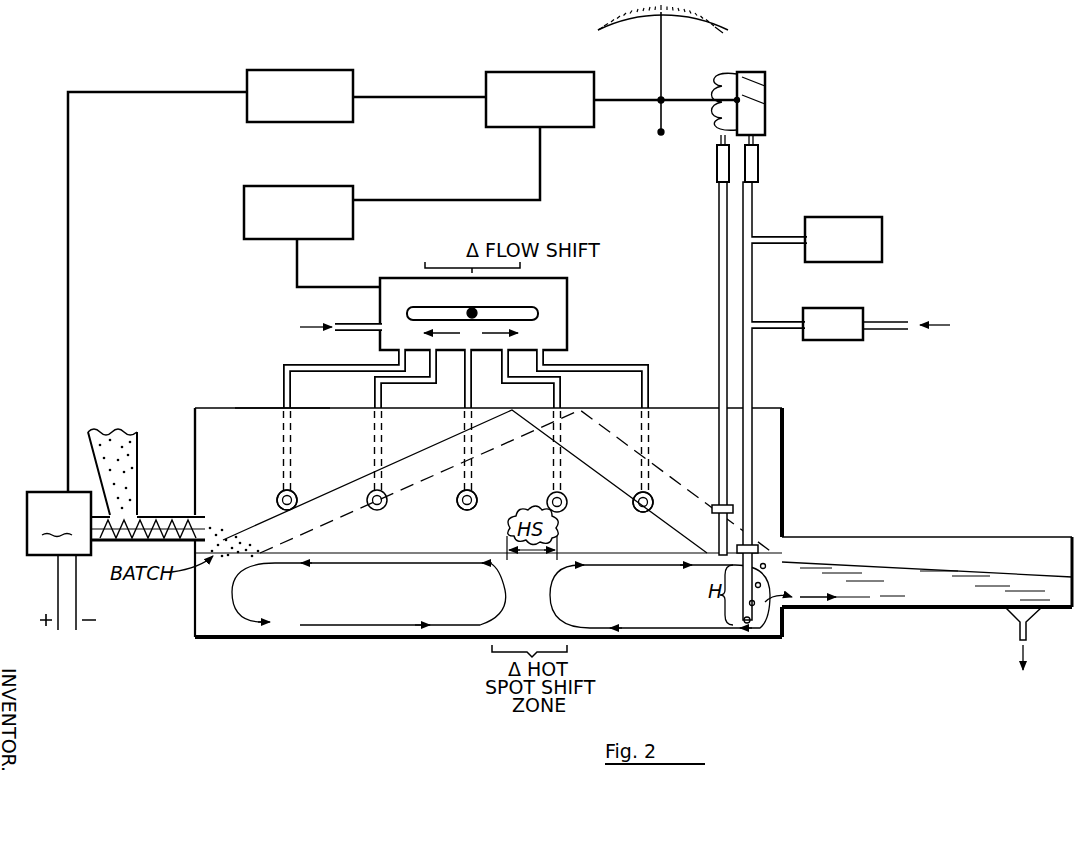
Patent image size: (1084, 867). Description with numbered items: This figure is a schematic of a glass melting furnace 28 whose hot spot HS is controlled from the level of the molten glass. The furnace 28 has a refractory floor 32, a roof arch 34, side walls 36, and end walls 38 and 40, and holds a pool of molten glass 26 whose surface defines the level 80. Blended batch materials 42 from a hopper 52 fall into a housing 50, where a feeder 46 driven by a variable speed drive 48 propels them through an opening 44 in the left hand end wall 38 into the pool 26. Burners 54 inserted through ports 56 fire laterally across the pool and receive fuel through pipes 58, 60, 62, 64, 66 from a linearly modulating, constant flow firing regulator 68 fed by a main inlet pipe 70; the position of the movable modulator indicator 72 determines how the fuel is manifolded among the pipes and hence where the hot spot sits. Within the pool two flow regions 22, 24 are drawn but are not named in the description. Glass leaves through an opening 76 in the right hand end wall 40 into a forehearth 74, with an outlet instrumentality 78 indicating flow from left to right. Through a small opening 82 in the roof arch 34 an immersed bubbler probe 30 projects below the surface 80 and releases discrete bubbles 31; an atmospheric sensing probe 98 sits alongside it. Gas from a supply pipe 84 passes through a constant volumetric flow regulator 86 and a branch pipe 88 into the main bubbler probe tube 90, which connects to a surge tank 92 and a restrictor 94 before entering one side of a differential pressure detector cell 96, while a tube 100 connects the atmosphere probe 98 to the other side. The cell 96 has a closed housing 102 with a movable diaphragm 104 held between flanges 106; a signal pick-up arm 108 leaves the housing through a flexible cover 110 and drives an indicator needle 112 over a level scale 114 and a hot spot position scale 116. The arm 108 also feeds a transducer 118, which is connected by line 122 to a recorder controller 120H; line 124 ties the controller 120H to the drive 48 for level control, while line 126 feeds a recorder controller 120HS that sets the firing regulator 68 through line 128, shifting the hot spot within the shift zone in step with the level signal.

The first convection cell 22 is at (390, 602).
The second convection cell 24 is at (660, 596).
The body of molten glass 26 is at (436, 554).
The glass melting furnace 28 is at (241, 400).
The bubbler probe 30 is at (783, 633).
The bubbles 31 is at (742, 616).
The refractory floor 32 is at (270, 636).
The roof arch 34 is at (276, 406).
The side walls 36 is at (240, 474).
The left hand end wall 38 is at (197, 408).
The right hand end wall 40 is at (784, 442).
The blended batch materials 42 is at (243, 502).
The opening 44 is at (191, 508).
The feeder 46 is at (176, 518).
The variable speed drive 48 is at (61, 561).
The housing 50 is at (137, 543).
The hopper 52 is at (140, 440).
The burners 54 is at (280, 494).
The ports 56 is at (292, 490).
The pipe 58 is at (293, 386).
The pipe 60 is at (383, 396).
The pipe 62 is at (473, 396).
The pipe 64 is at (562, 396).
The pipe 66 is at (645, 396).
The firing regulator 68 is at (571, 281).
The main inlet pipe 70 is at (360, 335).
The movable modulator indicator 72 is at (481, 310).
The forehearth 74 is at (985, 535).
The opening 76 is at (783, 612).
The outlet instrumentality 78 is at (1009, 627).
The level 80 is at (313, 553).
The small opening 82 is at (739, 409).
The supply pipe 84 is at (886, 324).
The constant volumetric flow regulator 86 is at (822, 308).
The branch pipe 88 is at (795, 321).
The main bubbler probe tube 90 is at (754, 268).
The surge tank 92 is at (872, 217).
The restrictor 94 is at (717, 165).
The differential pressure detector cell 96 is at (771, 71).
The atmospheric sensing probe 98 is at (712, 537).
The tube 100 is at (718, 205).
The closed housing 102 is at (720, 72).
The movable diaphragm 104 is at (766, 100).
The flanges 106 is at (766, 80).
The signal pick-up arm 108 is at (603, 103).
The flexible cover 110 is at (713, 122).
The visible indicator needle 112 is at (661, 80).
The level scale 114 is at (612, 33).
The hot spot position scale 116 is at (729, 27).
The transducer 118 is at (540, 72).
The recorder controller 120H is at (278, 72).
The recorder controller 120HS is at (260, 186).
The line 122 is at (380, 97).
The line 124 is at (116, 94).
The line 126 is at (470, 200).
The line 128 is at (297, 262).